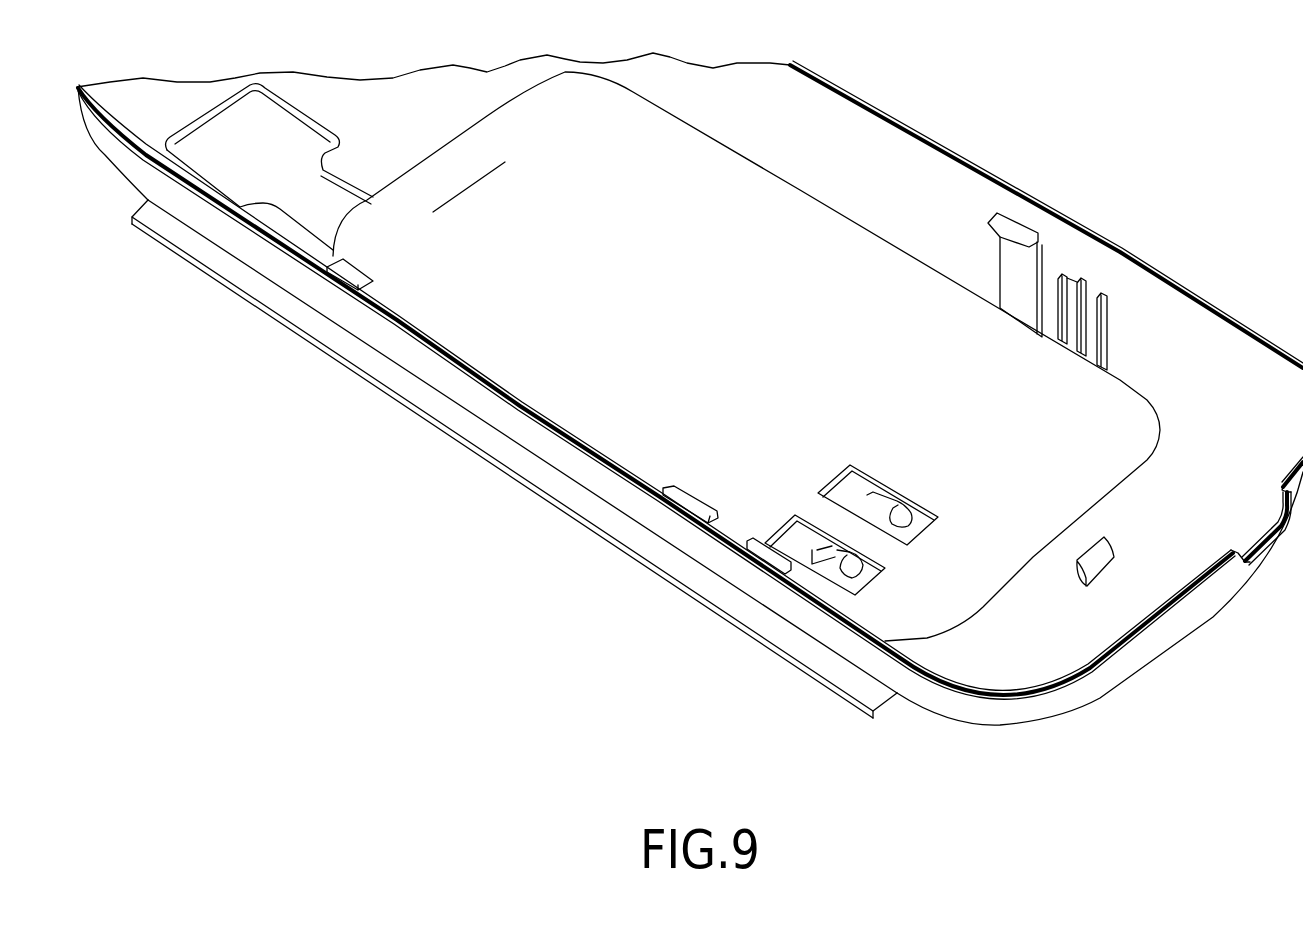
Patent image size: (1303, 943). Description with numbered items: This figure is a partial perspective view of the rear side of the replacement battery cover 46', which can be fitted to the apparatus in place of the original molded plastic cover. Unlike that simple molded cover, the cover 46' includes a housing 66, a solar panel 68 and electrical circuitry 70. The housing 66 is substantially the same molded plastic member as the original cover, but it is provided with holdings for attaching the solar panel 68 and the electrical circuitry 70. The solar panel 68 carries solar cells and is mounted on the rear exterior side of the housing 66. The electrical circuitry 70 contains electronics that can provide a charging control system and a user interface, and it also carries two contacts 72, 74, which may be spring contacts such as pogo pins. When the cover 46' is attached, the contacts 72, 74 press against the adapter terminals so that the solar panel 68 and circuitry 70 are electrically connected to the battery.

The battery cover 46' is at (690, 376).
The housing 66 is at (1140, 297).
The solar panel 68 is at (853, 707).
The electrical circuitry 70 is at (923, 597).
The contact 72 is at (897, 503).
The contact 74 is at (845, 557).